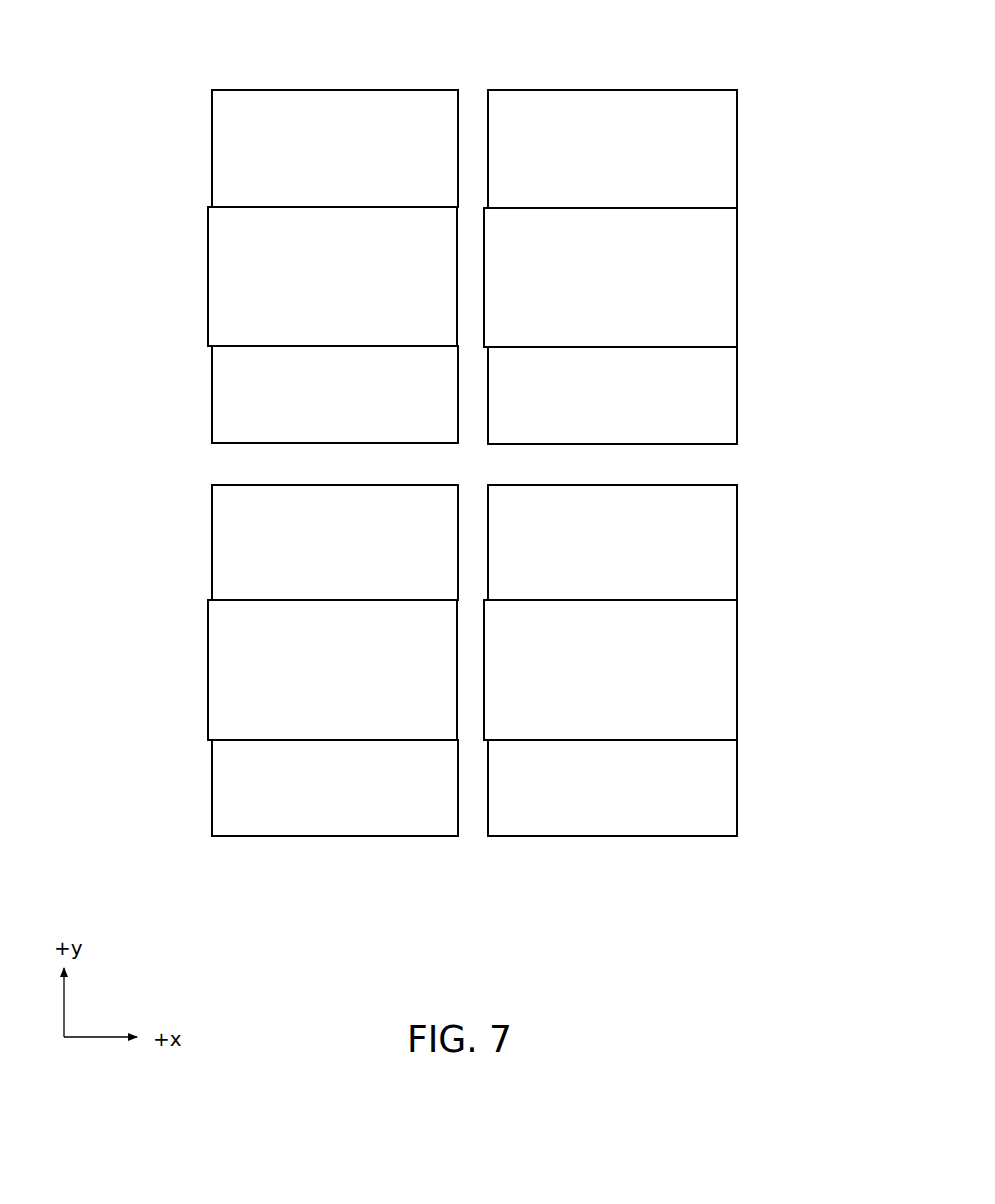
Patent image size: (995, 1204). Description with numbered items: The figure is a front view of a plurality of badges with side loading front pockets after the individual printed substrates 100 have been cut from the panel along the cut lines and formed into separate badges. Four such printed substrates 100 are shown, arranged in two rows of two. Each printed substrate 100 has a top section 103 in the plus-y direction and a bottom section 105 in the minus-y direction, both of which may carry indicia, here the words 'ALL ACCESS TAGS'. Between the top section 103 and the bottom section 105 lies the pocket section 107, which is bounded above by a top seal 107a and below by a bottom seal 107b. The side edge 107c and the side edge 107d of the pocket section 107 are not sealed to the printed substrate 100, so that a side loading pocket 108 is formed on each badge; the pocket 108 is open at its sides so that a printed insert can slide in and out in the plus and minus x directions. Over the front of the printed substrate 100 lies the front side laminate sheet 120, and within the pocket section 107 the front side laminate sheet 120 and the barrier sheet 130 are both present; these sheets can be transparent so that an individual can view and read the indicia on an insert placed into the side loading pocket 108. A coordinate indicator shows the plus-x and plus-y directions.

The printed substrate 100 is at (469, 461).
The top section 103 is at (327, 138).
The bottom section 105 is at (324, 432).
The pocket section 107 is at (743, 209).
The top seal 107a is at (277, 207).
The bottom seal 107b is at (235, 345).
The side edge 107c is at (208, 262).
The side edge 107d is at (457, 258).
The side loading pocket 108 is at (206, 288).
The front side laminate sheet 120 is at (230, 124).
The barrier sheet 130 is at (405, 262).